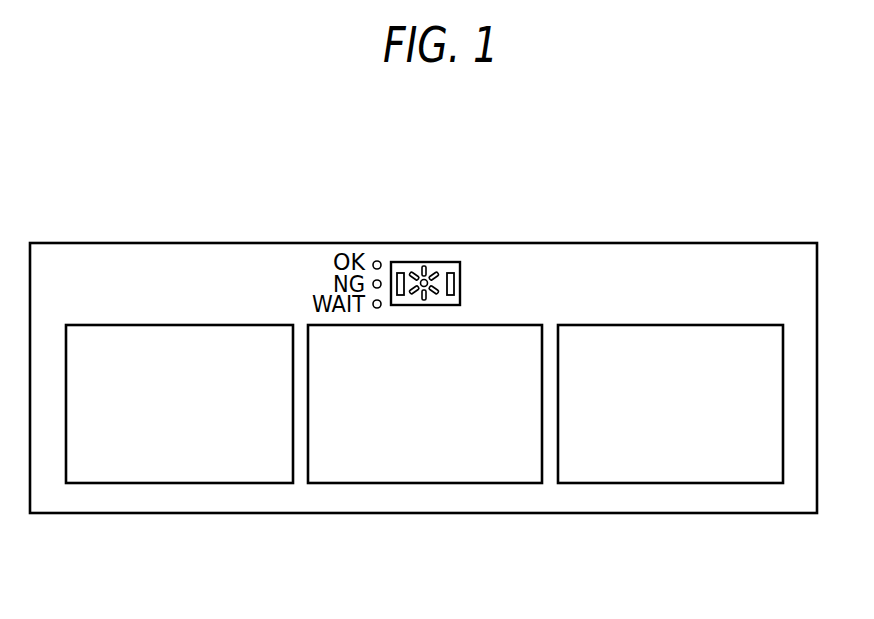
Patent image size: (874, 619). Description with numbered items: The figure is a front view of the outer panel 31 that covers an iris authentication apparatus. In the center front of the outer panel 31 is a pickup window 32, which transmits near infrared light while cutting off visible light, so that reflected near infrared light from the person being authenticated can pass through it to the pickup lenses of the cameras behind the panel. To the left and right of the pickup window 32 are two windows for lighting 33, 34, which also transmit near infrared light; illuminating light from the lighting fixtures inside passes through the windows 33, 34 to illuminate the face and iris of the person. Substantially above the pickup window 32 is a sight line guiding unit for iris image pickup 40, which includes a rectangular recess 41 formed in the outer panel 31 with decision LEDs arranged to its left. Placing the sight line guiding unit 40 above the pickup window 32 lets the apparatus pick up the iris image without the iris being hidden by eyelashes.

The outer panel 31 is at (745, 260).
The pickup window 32 is at (445, 465).
The window for lighting 33 is at (200, 465).
The window for lighting 34 is at (685, 472).
The sight line guiding unit for iris image pickup 40 is at (457, 265).
The rectangular recess 41 is at (410, 272).